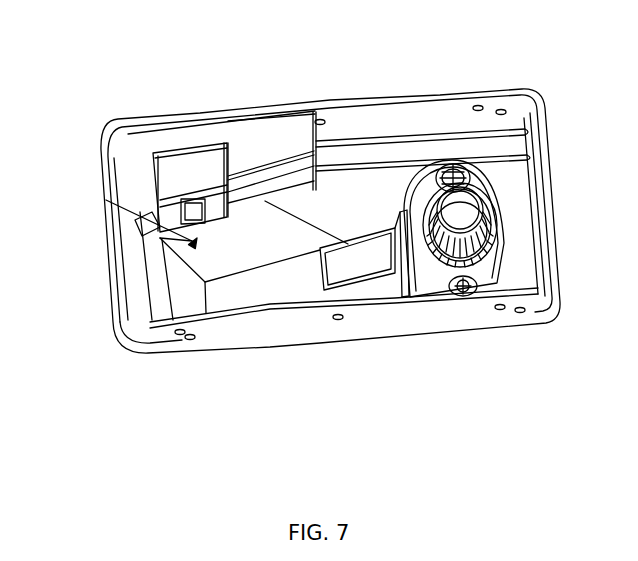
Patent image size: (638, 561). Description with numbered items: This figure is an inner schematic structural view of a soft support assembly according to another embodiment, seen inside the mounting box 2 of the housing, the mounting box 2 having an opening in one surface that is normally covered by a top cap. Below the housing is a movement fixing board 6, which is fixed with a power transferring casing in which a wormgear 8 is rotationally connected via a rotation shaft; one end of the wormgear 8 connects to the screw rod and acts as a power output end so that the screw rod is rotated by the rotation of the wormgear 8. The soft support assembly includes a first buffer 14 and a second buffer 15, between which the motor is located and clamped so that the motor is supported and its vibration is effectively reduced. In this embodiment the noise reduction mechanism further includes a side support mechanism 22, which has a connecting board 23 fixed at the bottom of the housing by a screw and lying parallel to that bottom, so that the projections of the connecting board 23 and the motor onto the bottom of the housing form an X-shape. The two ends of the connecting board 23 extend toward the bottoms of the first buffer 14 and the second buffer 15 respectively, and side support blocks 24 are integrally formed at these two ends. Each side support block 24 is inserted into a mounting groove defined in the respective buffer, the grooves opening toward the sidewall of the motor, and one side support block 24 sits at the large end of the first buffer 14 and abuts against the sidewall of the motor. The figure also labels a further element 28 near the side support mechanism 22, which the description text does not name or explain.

The mounting box 2 is at (373, 118).
The movement fixing board 6 is at (492, 267).
The wormgear 8 is at (495, 227).
The first buffer 14 is at (250, 132).
The second buffer 15 is at (258, 283).
The side support mechanism 22 is at (192, 241).
The connecting board 23 is at (206, 252).
The side support block 24 is at (183, 165).
The connector 28 is at (181, 212).